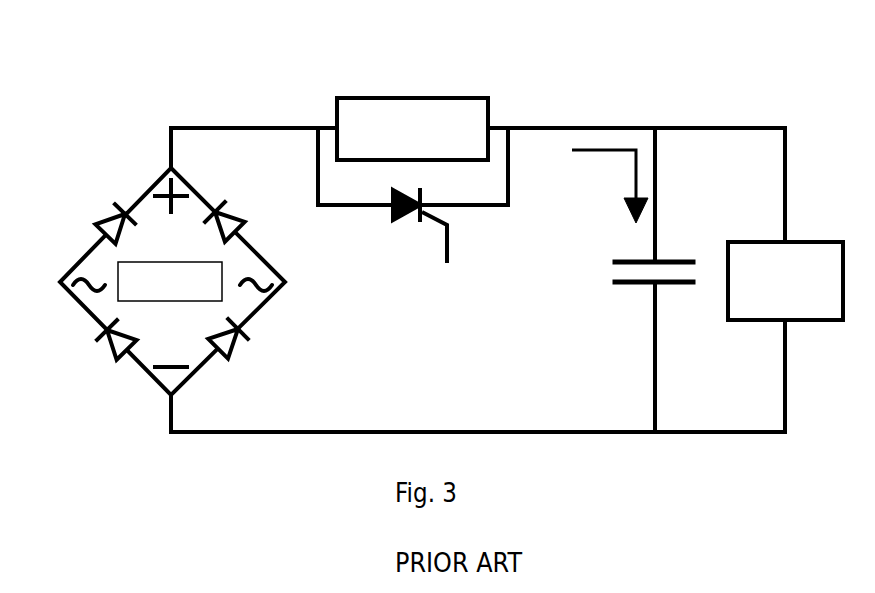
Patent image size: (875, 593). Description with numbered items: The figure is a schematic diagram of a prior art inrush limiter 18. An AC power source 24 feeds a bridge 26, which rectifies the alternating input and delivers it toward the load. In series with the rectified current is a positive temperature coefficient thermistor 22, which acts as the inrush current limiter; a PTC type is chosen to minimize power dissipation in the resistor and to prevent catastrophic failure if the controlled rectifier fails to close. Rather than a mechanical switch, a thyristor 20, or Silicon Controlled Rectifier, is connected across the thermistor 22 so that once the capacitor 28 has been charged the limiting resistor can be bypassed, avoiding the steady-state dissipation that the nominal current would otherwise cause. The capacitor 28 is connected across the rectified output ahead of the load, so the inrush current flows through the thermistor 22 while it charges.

The inrush limiter 18 is at (588, 50).
The thyristor 20 is at (393, 230).
The positive temperature coefficient thermistor 22 is at (333, 103).
The AC power source 24 is at (128, 290).
The bridge 26 is at (145, 187).
The capacitor 28 is at (607, 288).